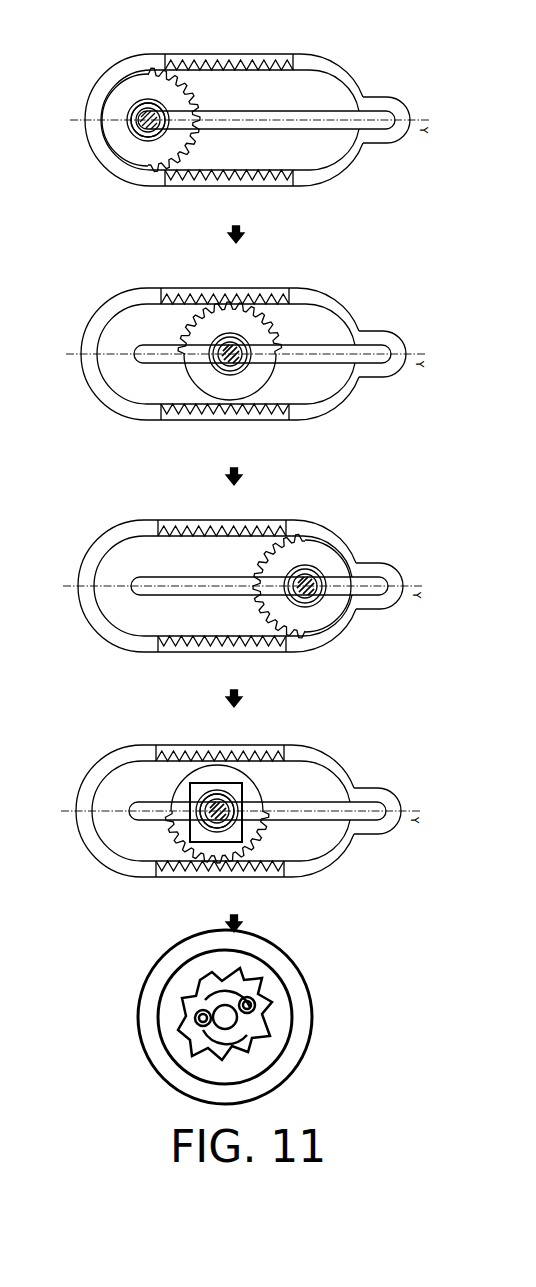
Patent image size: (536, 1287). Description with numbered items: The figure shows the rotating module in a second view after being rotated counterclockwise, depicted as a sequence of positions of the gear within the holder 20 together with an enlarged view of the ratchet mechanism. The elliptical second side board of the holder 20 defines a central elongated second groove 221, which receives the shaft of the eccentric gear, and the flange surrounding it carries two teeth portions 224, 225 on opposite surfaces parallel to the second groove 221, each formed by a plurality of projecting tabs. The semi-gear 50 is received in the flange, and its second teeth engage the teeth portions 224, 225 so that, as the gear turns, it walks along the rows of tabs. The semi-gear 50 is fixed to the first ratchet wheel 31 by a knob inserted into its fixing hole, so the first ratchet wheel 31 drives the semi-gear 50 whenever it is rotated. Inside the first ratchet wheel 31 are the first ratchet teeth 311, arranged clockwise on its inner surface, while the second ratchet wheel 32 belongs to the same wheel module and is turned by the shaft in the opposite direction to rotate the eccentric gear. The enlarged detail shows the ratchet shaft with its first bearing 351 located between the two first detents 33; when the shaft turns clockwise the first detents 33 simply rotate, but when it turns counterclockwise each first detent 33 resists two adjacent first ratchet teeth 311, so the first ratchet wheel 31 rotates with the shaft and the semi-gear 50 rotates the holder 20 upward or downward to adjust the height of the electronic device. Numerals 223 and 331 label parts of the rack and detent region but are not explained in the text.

The holder 20 is at (344, 75).
The second groove 221 is at (357, 150).
The rack 223 is at (213, 648).
The teeth portion 224 is at (277, 62).
The teeth portion 225 is at (282, 178).
The first ratchet wheel 31 is at (130, 128).
The first ratchet teeth 311 is at (234, 374).
The second ratchet wheel 32 is at (193, 175).
The first detent 33 is at (132, 110).
The coupling member portion 331 is at (136, 130).
The first bearing 351 is at (138, 105).
The semi-gear 50 is at (124, 168).